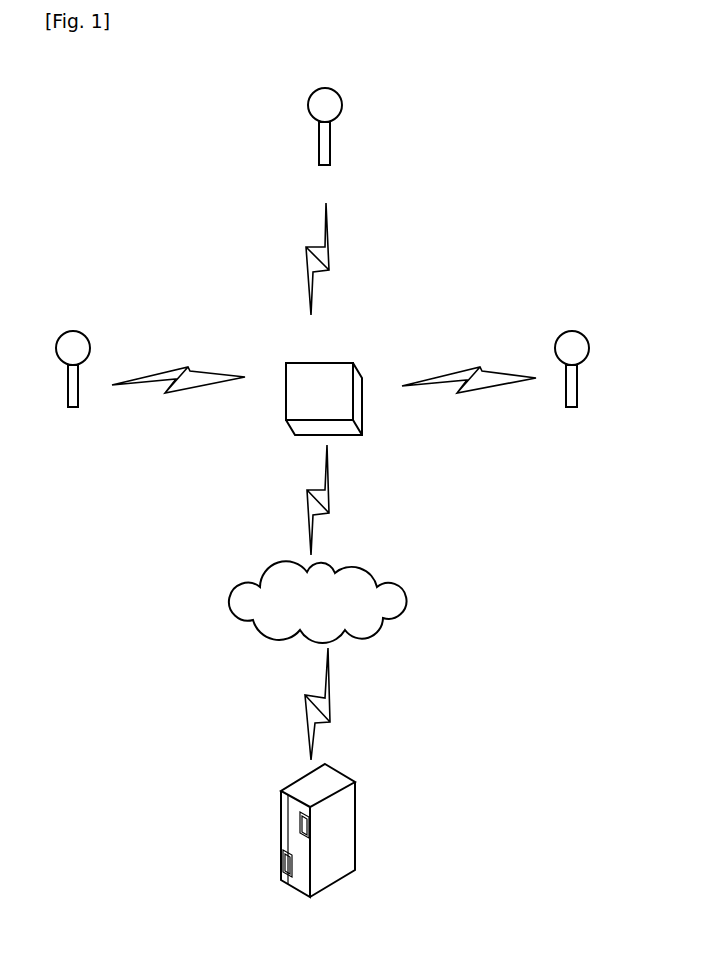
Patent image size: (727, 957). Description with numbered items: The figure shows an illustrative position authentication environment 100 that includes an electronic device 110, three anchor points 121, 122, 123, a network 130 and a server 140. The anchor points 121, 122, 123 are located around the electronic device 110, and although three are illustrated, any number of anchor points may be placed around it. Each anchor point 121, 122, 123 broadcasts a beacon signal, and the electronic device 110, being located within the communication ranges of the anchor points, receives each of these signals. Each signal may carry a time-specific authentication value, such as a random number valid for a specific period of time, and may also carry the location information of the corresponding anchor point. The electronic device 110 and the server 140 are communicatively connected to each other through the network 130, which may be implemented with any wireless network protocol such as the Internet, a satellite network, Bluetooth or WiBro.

The position authentication environment 100 is at (115, 80).
The electronic device 110 is at (318, 363).
The anchor point 121 is at (76, 332).
The anchor point 122 is at (326, 89).
The anchor point 123 is at (575, 332).
The network 130 is at (360, 568).
The server 140 is at (340, 773).